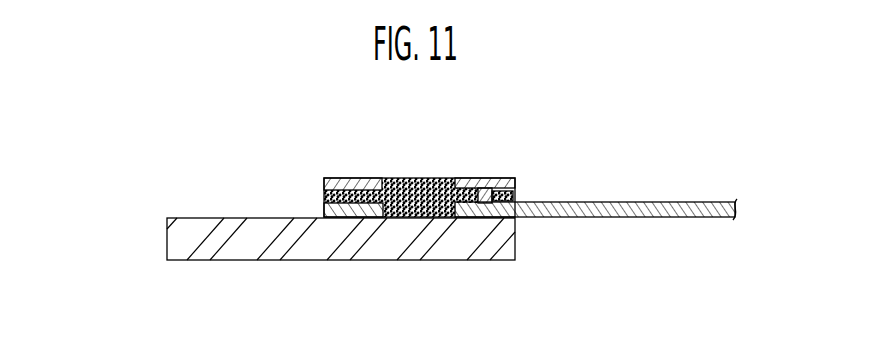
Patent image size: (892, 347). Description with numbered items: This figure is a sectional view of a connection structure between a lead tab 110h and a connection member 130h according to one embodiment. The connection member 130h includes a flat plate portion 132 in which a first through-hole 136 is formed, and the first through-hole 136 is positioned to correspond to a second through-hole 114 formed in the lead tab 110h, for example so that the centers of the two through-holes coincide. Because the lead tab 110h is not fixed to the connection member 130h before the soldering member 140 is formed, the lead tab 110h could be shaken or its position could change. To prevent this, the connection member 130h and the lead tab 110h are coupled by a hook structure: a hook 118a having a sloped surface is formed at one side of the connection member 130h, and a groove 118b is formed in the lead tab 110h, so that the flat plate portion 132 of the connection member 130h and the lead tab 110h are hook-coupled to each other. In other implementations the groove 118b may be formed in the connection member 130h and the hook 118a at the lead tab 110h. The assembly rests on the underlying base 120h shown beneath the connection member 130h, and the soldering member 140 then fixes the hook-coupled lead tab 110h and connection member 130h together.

The lead tab 110h is at (611, 186).
The second through-hole 114 is at (402, 215).
The hook 118a is at (515, 200).
The groove 118b is at (465, 214).
The base substrate 120h is at (286, 250).
The connection member 130h is at (355, 166).
The flat plate portion 132 is at (467, 183).
The first through-hole 136 is at (394, 178).
The soldering member 140 is at (428, 183).